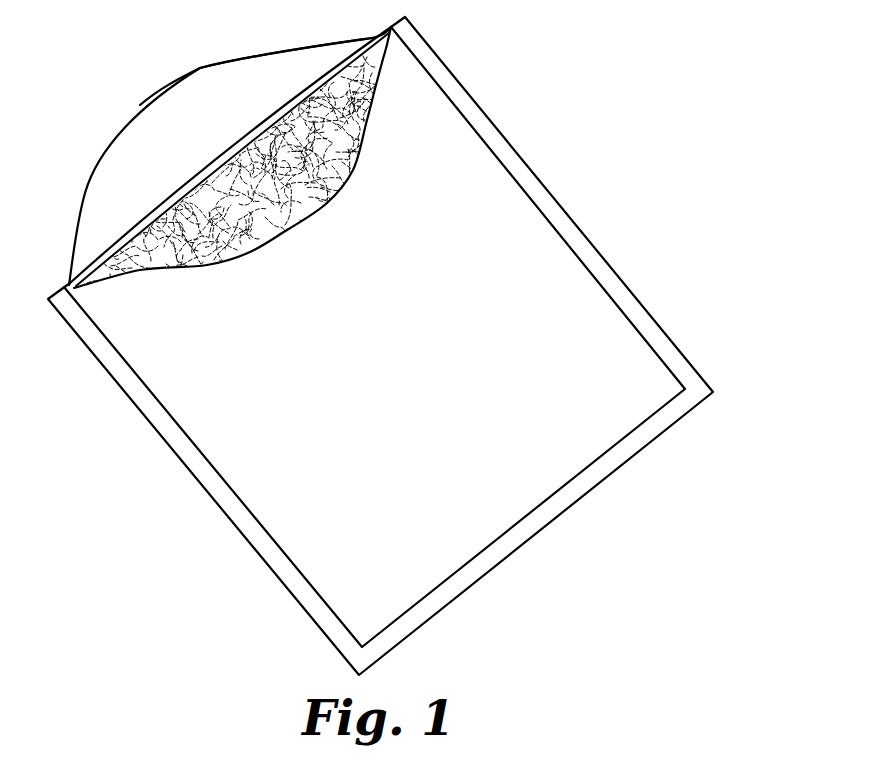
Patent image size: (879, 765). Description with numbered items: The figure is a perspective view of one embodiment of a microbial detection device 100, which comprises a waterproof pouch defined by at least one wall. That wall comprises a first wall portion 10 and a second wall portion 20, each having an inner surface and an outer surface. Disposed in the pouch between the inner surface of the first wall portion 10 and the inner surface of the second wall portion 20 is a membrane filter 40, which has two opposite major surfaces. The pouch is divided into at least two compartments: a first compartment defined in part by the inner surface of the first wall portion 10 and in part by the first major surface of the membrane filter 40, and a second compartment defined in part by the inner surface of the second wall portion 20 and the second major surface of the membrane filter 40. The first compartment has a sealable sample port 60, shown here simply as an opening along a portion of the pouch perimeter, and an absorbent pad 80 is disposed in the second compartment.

The device 100 is at (473, 43).
The first wall portion 10 is at (323, 199).
The second wall portion 20 is at (148, 120).
The membrane filter 40 is at (240, 241).
The sealable sample port 60 is at (217, 63).
The absorbent pad 80 is at (243, 142).